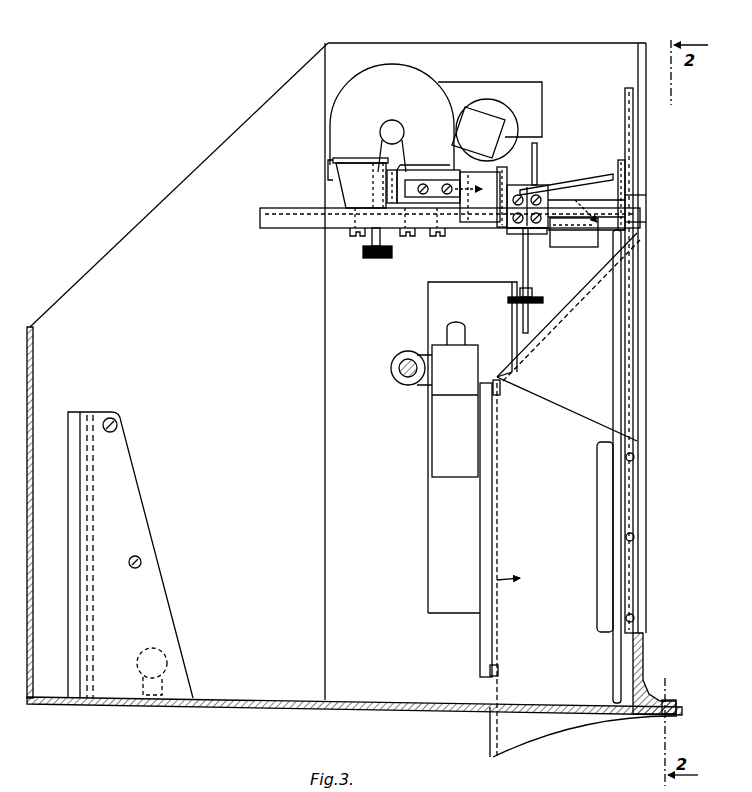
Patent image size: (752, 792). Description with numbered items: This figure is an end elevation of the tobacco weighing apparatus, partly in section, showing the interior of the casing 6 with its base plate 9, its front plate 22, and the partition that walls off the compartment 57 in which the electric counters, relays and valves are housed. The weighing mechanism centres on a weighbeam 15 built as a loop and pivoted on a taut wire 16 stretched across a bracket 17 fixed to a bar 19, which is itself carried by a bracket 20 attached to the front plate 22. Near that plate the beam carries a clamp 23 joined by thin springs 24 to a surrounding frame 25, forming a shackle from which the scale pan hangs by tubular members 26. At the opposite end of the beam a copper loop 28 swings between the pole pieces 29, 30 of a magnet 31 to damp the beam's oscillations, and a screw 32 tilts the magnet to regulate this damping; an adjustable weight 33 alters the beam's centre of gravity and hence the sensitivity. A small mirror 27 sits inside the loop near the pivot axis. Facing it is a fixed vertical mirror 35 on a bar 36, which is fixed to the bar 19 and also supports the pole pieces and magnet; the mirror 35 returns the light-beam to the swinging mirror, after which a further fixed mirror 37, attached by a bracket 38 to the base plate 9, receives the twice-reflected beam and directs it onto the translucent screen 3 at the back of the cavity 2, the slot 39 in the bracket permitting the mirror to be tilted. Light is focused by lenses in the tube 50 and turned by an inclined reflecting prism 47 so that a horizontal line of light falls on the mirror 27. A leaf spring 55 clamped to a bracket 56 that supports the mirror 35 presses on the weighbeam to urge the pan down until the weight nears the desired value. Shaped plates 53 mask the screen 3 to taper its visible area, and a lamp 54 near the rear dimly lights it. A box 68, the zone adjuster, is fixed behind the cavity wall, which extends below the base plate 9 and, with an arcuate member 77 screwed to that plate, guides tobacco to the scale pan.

The cavity 2 is at (480, 583).
The translucent screen 3 is at (499, 470).
The casing 6 is at (33, 372).
The base plate 9 is at (418, 703).
The weighbeam 15 is at (470, 222).
The taut wire 16 is at (520, 236).
The bracket 17 is at (500, 228).
The bar 19 is at (580, 242).
The bracket 20 is at (632, 222).
The front plate 22 is at (643, 62).
The clamp 23 is at (628, 178).
The thin springs 24 is at (646, 194).
The frame 25 is at (628, 165).
The tubular members 26 is at (613, 660).
The mirror 27 is at (548, 163).
The copper loop 28 is at (405, 170).
The pole piece 29 is at (350, 198).
The pole piece 30 is at (430, 167).
The magnet 31 is at (365, 80).
The screw 32 is at (372, 262).
The adjustable weight 33 is at (508, 305).
The mirror 35 is at (527, 190).
The bar 36 is at (285, 232).
The mirror 37 is at (90, 518).
The bracket 38 is at (148, 592).
The slot 39 is at (107, 418).
The reflecting prism 47 is at (508, 142).
The tube 50 is at (512, 112).
The plates 53 is at (483, 500).
The lamp 54 is at (165, 652).
The leaf spring 55 is at (600, 172).
The bracket 56 is at (492, 178).
The compartment 57 is at (335, 401).
The box 68 is at (432, 533).
The arcuate member 77 is at (660, 722).